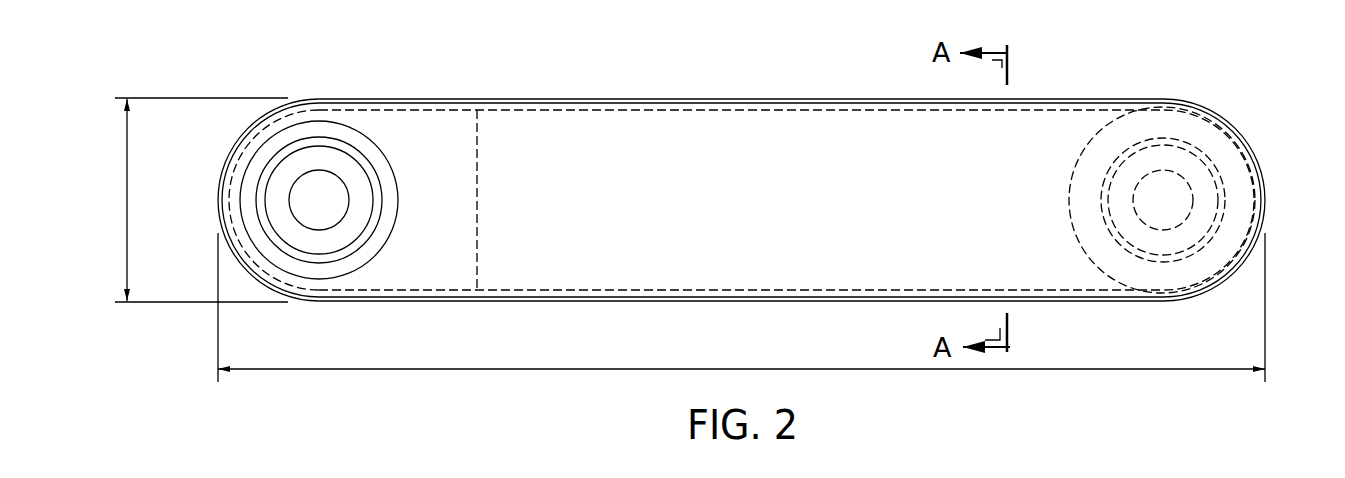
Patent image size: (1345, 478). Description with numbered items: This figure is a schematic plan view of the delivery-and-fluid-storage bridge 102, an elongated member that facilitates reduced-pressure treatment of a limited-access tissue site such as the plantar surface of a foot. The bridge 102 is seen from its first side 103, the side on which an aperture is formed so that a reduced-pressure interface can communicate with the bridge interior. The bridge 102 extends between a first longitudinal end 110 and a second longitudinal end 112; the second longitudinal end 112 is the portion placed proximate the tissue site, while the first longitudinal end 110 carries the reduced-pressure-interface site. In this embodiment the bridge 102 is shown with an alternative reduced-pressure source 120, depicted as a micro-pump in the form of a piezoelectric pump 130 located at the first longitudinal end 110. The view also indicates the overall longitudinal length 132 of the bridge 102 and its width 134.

The delivery-and-fluid-storage bridge 102 is at (509, 95).
The first side 103 is at (735, 217).
The first longitudinal end 110 is at (222, 169).
The second longitudinal end 112 is at (1262, 167).
The reduced-pressure source 120 is at (387, 160).
The piezoelectric pump 130 is at (402, 243).
The longitudinal length 132 is at (527, 370).
The width 134 is at (127, 242).